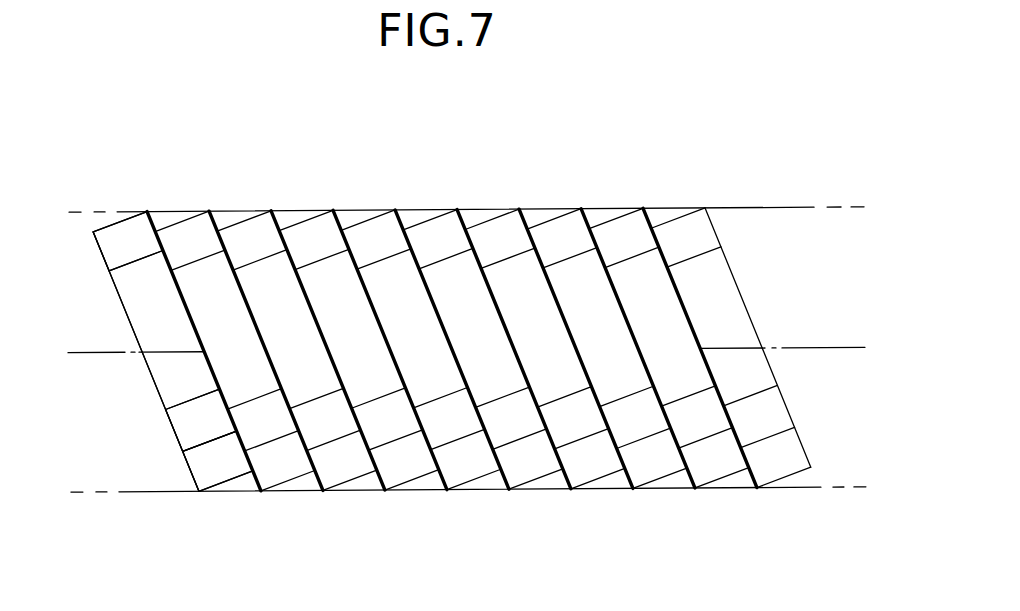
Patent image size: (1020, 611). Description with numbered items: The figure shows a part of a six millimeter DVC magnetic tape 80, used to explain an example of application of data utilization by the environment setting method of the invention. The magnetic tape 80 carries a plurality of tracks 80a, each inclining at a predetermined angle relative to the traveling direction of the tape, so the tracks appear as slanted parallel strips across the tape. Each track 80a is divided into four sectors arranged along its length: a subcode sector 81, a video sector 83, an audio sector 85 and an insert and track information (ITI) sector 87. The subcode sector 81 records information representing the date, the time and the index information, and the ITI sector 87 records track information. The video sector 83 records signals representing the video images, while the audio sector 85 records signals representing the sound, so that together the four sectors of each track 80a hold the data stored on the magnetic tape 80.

The magnetic tape 80 is at (779, 161).
The track 80a is at (613, 209).
The subcode sector 81 is at (102, 250).
The video sector 83 is at (157, 368).
The audio sector 85 is at (192, 429).
The insert and track information (ITI) sector 87 is at (198, 467).